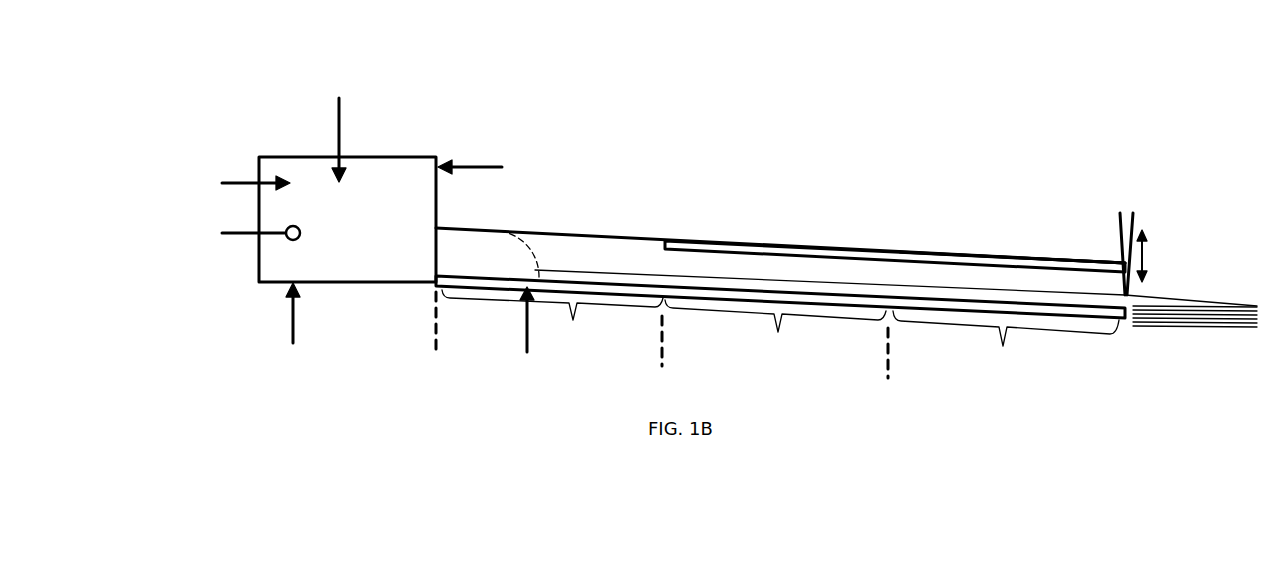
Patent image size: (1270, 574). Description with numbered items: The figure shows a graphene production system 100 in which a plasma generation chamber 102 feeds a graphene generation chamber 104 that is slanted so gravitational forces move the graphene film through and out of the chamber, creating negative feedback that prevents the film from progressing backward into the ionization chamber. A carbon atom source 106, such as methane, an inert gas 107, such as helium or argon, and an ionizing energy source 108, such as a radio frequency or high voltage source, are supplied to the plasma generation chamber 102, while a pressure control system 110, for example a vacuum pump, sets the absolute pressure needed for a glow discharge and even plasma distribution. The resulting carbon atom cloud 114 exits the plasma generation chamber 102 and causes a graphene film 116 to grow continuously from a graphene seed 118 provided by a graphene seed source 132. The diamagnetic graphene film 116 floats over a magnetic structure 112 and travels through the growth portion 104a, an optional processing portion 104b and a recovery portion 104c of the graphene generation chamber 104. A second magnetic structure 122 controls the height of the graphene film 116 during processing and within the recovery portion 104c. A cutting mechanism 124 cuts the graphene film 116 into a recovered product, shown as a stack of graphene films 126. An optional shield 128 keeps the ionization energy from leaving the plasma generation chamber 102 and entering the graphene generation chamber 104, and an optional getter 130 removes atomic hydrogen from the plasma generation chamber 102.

The graphene production system 100 is at (711, 80).
The plasma generation chamber 102 is at (388, 156).
The graphene generation chamber 104 is at (657, 239).
The growth portion 104a is at (600, 389).
The processing portion 104b is at (765, 387).
The recovery portion 104c is at (998, 394).
The carbon atom source 106 is at (333, 136).
The inert gas 107 is at (240, 181).
The ionizing energy source 108 is at (297, 317).
The pressure control system 110 is at (245, 233).
The magnetic structure 112 is at (747, 292).
The carbon atom cloud 114 is at (457, 248).
The graphene film 116 is at (1005, 256).
The graphene seed 118 is at (536, 258).
The second magnetic structure 122 is at (835, 247).
The cutting mechanism 124 is at (1137, 222).
The stack of graphene films 126 is at (1197, 327).
The shield 128 is at (433, 248).
The getter 130 is at (480, 160).
The graphene seed source 132 is at (522, 333).